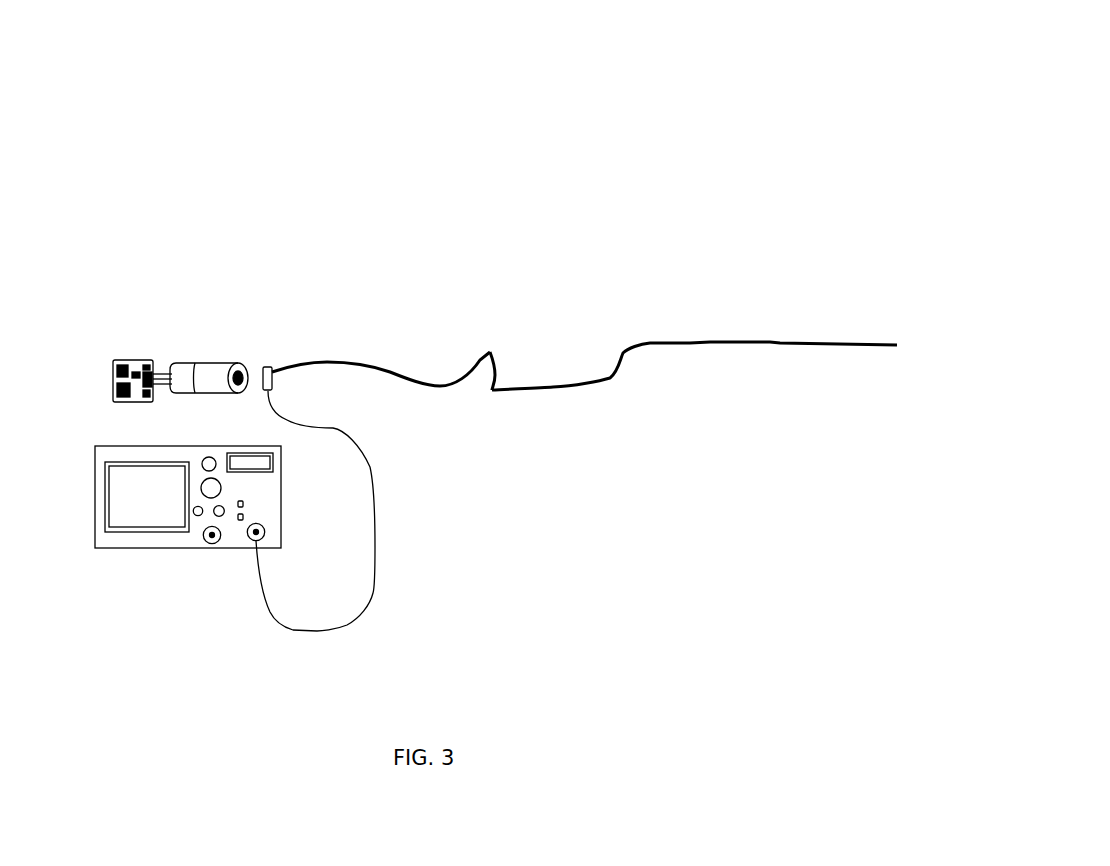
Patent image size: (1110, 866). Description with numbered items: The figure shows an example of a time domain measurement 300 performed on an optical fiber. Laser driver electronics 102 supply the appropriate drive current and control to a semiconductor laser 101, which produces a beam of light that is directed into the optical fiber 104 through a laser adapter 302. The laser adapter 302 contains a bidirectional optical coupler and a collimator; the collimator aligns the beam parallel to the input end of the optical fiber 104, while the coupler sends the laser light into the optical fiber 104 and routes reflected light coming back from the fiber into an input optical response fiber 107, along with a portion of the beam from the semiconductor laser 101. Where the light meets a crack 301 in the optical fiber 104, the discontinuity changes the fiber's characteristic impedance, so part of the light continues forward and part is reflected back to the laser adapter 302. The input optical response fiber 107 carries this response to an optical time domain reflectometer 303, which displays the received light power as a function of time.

The time domain measurement 300 is at (565, 75).
The laser driver electronics 102 is at (136, 360).
The semiconductor laser 101 is at (207, 362).
The laser adapter 302 is at (262, 366).
The optical fiber 104 is at (603, 336).
The crack 301 is at (497, 393).
The optical time domain reflectometer 303 is at (119, 548).
The input optical response fiber 107 is at (297, 633).